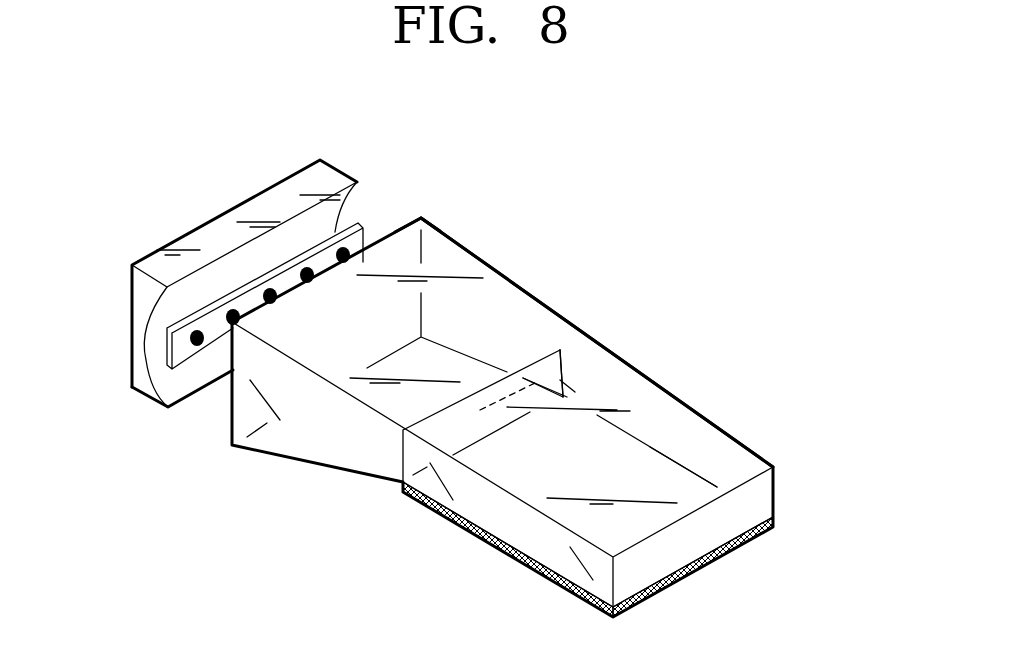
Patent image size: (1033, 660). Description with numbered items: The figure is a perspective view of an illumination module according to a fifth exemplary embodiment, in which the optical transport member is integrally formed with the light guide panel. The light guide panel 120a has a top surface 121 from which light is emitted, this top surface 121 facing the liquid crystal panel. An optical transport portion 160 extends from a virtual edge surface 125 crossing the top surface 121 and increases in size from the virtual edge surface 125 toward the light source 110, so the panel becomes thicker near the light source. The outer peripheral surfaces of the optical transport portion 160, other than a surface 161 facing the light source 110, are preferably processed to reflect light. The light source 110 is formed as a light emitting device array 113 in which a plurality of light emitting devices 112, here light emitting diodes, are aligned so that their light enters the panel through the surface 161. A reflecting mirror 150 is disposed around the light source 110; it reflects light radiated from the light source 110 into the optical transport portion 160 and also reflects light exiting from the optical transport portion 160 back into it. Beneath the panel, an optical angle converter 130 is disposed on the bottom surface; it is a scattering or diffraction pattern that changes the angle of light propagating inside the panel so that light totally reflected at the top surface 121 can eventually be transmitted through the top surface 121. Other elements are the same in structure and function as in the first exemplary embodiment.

The light source 110 is at (206, 328).
The light emitting devices 112 is at (197, 346).
The light emitting device array 113 is at (168, 367).
The reflecting mirror 150 is at (149, 258).
The optical transport portion 160 is at (525, 272).
The surface facing the light source 161 is at (398, 252).
The light guide panel 120a is at (803, 491).
The top surface 121 is at (707, 458).
The virtual edge surface 125 is at (566, 350).
The optical angle converter 130 is at (567, 590).